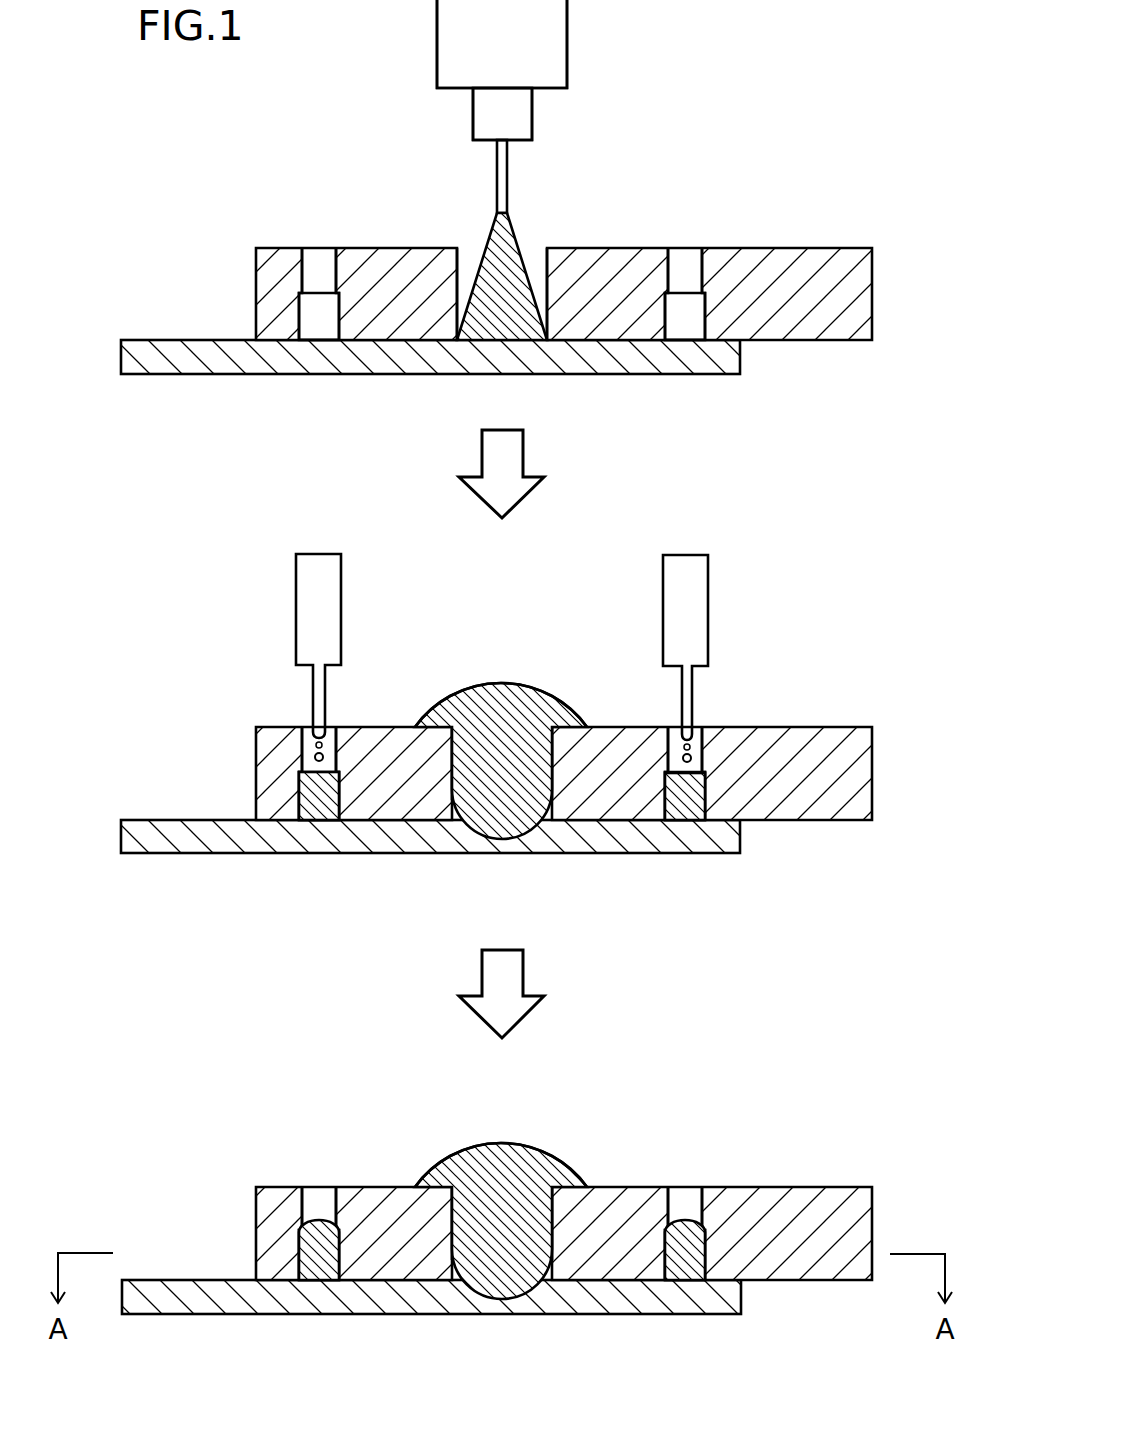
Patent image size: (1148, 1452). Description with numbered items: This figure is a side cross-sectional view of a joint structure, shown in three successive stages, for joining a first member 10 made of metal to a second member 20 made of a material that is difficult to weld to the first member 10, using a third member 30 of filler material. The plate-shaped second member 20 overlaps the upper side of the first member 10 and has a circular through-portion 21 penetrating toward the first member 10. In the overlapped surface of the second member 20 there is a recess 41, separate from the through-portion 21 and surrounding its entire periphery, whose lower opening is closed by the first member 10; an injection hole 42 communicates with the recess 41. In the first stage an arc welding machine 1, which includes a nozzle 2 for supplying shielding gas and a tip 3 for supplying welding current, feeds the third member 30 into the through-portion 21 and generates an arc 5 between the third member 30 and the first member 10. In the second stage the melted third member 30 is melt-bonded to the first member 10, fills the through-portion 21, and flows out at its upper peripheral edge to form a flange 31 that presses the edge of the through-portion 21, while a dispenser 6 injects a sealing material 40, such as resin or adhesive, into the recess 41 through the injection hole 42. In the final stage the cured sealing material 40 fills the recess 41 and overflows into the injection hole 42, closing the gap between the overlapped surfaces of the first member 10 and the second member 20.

The arc welding machine 1 is at (592, 18).
The nozzle 2 is at (567, 68).
The tip 3 is at (532, 113).
The arc 5 is at (515, 226).
The dispenser 6 is at (296, 605).
The first member 10 is at (170, 340).
The second member 20 is at (797, 248).
The through-portion 21 is at (465, 267).
The third member 30 is at (507, 175).
The flange 31 is at (575, 705).
The sealing material 40 is at (320, 815).
The recess 41 is at (305, 312).
The injection hole 42 is at (327, 258).